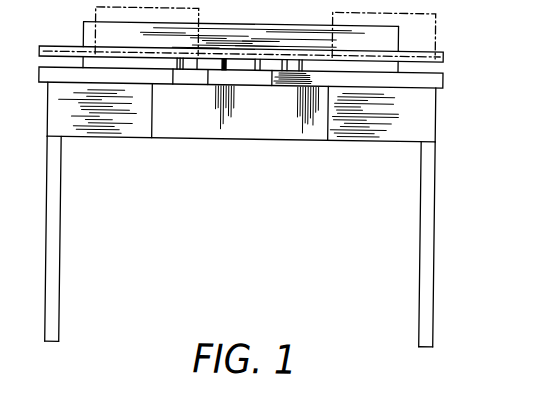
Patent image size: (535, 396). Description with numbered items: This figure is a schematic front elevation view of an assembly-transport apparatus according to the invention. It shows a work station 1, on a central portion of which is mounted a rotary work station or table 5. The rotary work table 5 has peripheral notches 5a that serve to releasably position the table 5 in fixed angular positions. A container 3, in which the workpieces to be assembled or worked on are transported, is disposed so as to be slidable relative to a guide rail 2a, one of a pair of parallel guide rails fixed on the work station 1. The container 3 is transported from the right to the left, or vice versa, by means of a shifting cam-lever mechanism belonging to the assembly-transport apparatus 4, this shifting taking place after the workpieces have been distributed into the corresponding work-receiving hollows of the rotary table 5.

The work station 1 is at (426, 109).
The guide rail 2a is at (446, 48).
The container 3 is at (97, 37).
The assembly-transport apparatus 4 is at (88, 32).
The rotary work table 5 is at (240, 66).
The peripheral notches 5a is at (220, 66).